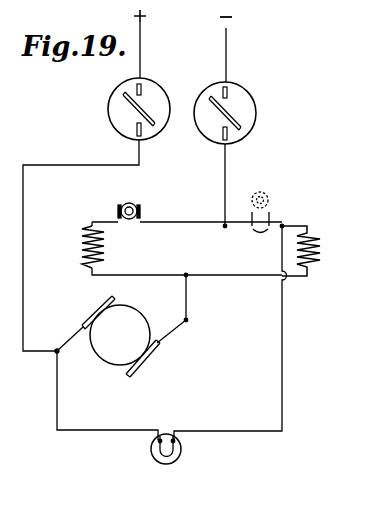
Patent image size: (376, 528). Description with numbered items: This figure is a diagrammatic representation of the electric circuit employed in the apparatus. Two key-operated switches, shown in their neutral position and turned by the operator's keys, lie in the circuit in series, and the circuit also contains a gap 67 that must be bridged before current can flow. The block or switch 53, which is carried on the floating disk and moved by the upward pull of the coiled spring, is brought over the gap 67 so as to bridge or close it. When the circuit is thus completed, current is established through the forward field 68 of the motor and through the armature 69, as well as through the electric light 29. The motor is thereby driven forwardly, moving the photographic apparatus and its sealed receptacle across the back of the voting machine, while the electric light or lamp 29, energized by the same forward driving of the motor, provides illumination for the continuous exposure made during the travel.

The electric light 29 is at (183, 452).
The block or switch 53 is at (260, 191).
The gap 67 is at (258, 235).
The forward field 68 is at (316, 240).
The armature 69 is at (133, 322).